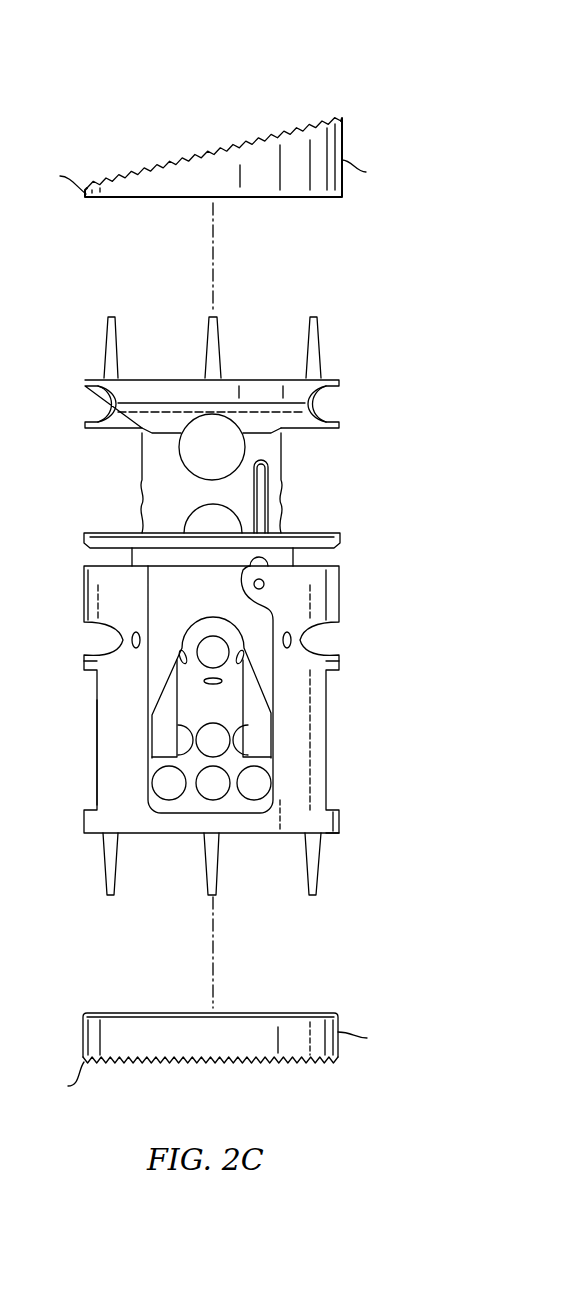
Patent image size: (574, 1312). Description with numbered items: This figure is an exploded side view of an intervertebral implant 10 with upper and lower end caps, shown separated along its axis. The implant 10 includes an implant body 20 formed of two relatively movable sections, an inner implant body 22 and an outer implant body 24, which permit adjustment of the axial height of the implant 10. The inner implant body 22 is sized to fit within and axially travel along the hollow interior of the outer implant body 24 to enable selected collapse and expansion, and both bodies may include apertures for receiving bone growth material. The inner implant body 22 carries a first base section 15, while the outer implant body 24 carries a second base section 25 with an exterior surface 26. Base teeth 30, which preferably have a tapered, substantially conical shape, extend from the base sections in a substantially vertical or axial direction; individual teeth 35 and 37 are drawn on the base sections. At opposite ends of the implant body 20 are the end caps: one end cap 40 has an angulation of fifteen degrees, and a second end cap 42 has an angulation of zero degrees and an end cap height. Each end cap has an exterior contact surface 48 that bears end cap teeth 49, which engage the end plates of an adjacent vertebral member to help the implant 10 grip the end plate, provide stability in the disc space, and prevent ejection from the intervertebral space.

The implant 10 is at (205, 56).
The first base section 15 is at (85, 397).
The implant body 20 is at (75, 591).
The inner implant body 22 is at (142, 478).
The outer implant body 24 is at (97, 721).
The second base section 25 is at (340, 822).
The exterior surface 26 is at (330, 835).
The base teeth 30 is at (103, 340).
The spike 35 is at (118, 334).
The spike 37 is at (313, 312).
The end cap 40 is at (354, 135).
The second end cap 42 is at (74, 1034).
The exterior contact surface 48 is at (157, 162).
The end cap teeth 49 is at (262, 136).